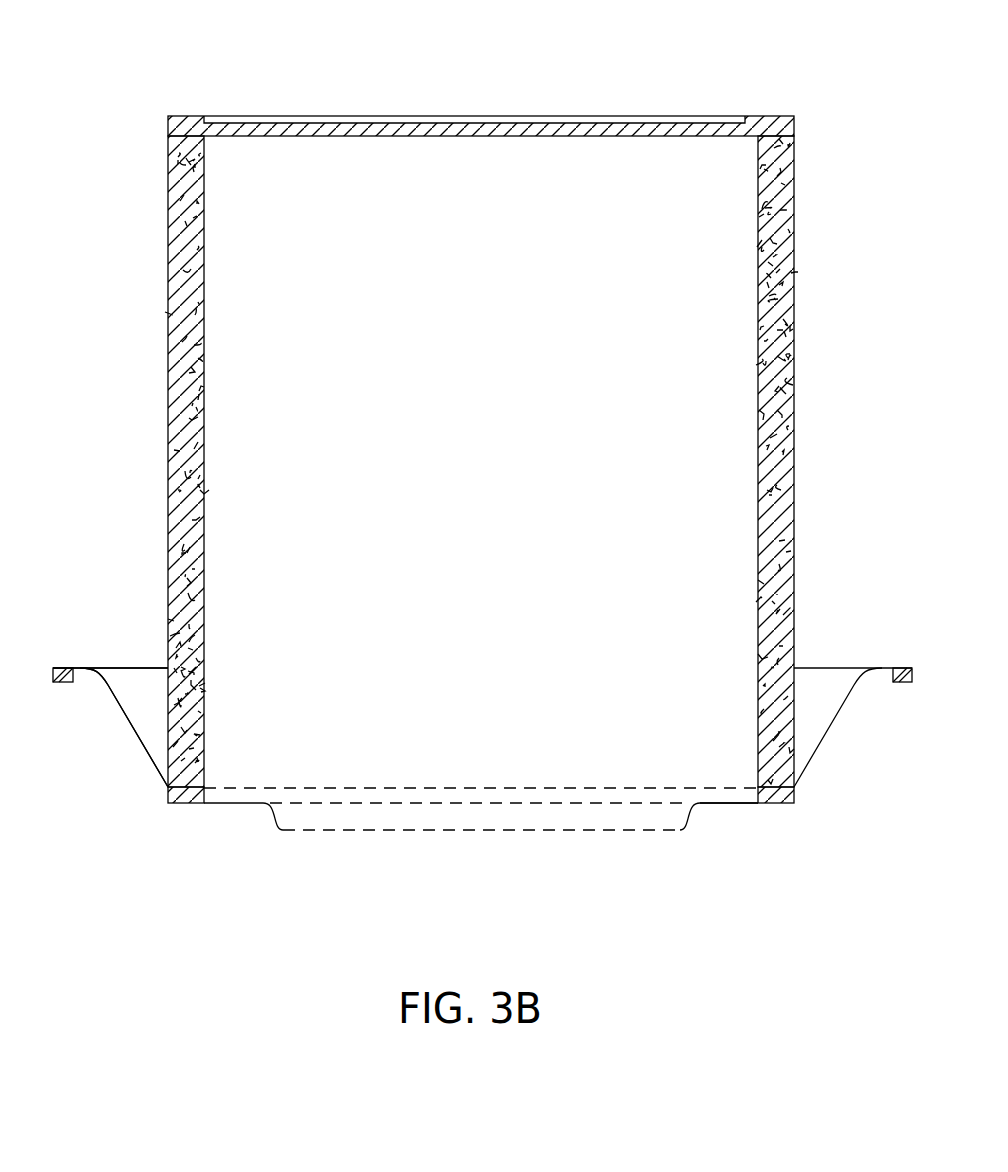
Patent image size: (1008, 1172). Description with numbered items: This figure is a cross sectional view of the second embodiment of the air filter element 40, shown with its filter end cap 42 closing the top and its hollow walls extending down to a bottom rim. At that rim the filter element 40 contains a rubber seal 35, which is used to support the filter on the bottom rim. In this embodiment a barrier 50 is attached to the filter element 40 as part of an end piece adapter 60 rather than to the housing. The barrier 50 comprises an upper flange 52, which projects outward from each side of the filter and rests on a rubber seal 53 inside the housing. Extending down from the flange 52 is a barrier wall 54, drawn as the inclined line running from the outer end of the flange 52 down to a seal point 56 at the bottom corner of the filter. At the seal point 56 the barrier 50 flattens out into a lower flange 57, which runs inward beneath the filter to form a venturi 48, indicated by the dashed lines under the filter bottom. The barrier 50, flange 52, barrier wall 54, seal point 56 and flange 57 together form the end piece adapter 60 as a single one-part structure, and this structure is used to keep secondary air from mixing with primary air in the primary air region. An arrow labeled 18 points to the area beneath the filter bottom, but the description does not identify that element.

The container 18 is at (378, 880).
The rubber seal 35 is at (204, 804).
The filter element 40 is at (786, 172).
The filter end cap 42 is at (205, 124).
The venturi 48 is at (692, 787).
The barrier 50 is at (120, 735).
The flange 52 is at (73, 668).
The rubber seal 53 is at (67, 682).
The barrier wall 54 is at (152, 763).
The seal point 56 is at (168, 801).
The flange 57 is at (235, 804).
The end piece adapter 60 is at (733, 812).